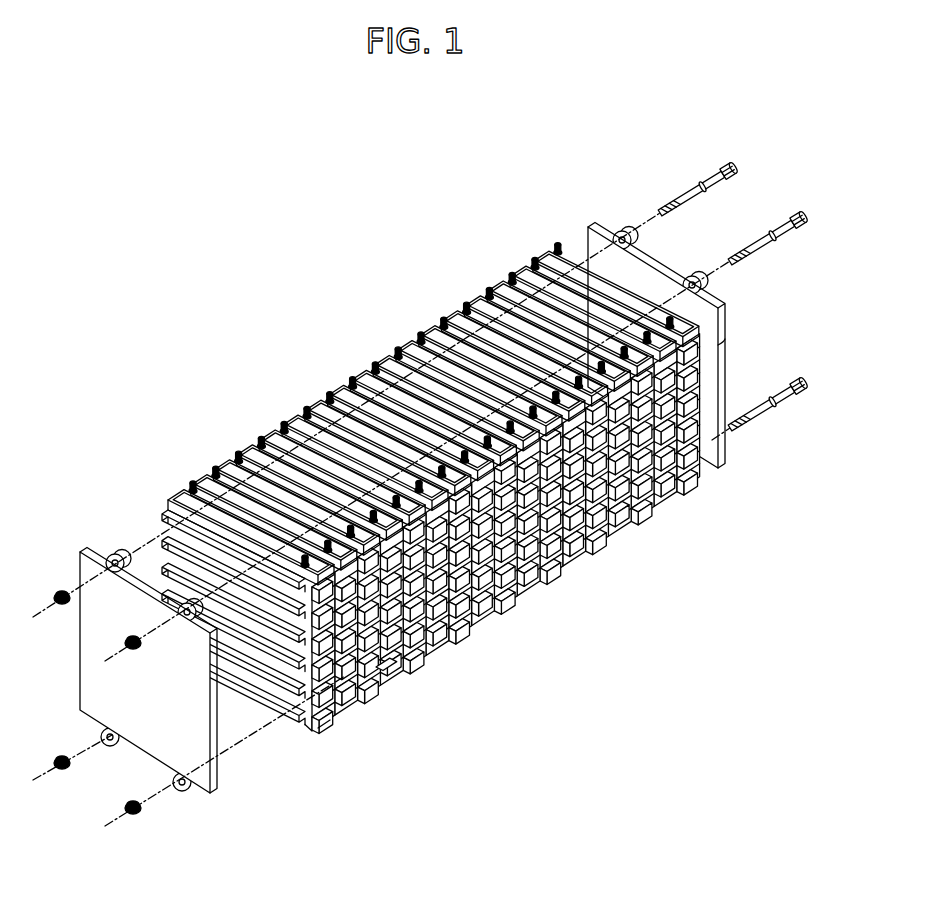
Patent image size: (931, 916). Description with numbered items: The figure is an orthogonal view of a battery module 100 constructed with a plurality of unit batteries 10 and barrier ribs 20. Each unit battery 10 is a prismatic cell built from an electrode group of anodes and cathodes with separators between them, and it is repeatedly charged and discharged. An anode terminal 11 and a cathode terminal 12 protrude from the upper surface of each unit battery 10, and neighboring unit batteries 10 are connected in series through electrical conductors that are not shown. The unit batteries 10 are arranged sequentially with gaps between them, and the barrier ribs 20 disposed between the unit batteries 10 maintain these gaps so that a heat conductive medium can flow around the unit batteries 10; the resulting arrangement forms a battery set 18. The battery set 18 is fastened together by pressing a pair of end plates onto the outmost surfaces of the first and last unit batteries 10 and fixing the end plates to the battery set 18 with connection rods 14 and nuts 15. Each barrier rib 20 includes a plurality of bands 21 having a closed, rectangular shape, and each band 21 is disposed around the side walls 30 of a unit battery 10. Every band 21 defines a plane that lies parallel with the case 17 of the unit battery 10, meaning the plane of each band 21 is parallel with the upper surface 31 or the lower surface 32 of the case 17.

The battery module 100 is at (290, 217).
The unit battery 10 is at (180, 484).
The anode terminal 11 is at (191, 482).
The cathode terminal 12 is at (300, 570).
The connection rod 14 is at (781, 224).
The nut 15 is at (126, 646).
The case 17 is at (385, 675).
The battery set 18 is at (344, 378).
The barrier rib 20 is at (334, 691).
The band 21 is at (318, 728).
The side wall 30 is at (472, 613).
The upper surface 31 is at (345, 375).
The lower surface 32 is at (480, 638).